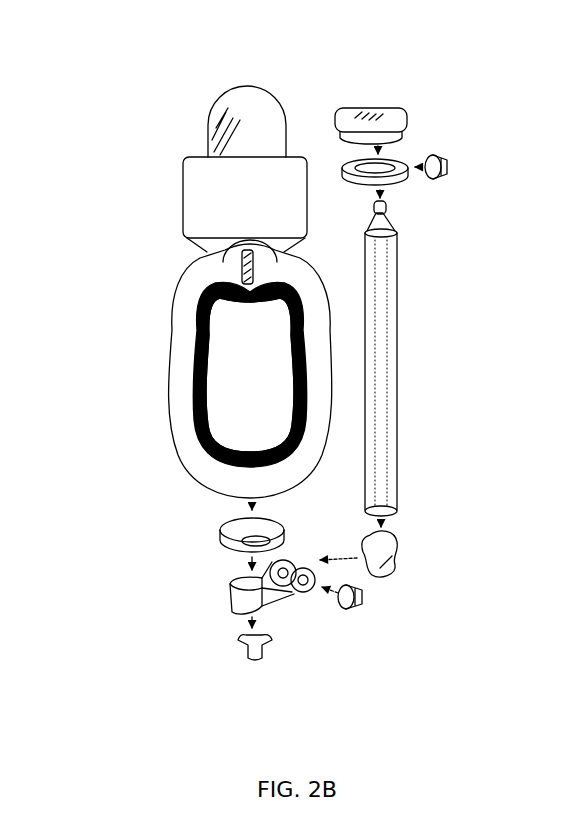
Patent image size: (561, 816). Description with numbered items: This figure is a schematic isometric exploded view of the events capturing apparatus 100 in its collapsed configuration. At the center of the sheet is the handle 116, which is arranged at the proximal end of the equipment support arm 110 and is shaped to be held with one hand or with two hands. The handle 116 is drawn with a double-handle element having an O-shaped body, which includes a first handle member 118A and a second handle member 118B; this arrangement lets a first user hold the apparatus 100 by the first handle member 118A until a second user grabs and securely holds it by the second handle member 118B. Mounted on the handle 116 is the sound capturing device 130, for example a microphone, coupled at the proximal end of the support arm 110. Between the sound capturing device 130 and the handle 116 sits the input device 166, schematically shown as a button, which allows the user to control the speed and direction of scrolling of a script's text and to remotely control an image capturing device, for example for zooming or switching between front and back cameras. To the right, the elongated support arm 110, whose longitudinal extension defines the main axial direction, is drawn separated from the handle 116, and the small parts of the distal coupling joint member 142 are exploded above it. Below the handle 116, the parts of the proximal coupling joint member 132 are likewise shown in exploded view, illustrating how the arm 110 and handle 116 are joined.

The events capturing apparatus 100 is at (128, 105).
The sound capturing device 130 is at (292, 92).
The handle 116 is at (167, 432).
The input device 166 is at (240, 270).
The first handle member 118A is at (178, 334).
The second handle member 118B is at (310, 334).
The distal coupling joint member 142 is at (452, 93).
The equipment support arm 110 is at (385, 312).
The proximal coupling joint member 132 is at (210, 513).